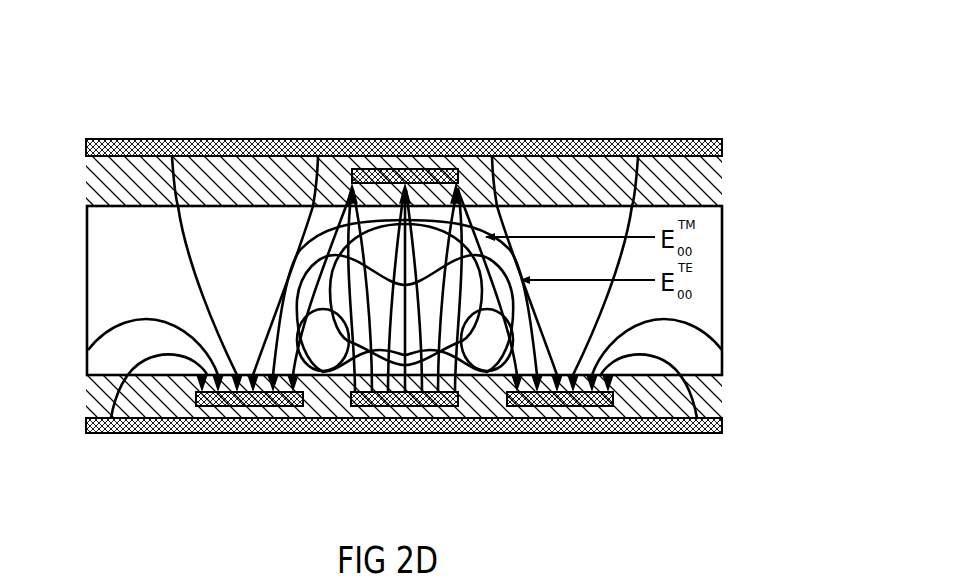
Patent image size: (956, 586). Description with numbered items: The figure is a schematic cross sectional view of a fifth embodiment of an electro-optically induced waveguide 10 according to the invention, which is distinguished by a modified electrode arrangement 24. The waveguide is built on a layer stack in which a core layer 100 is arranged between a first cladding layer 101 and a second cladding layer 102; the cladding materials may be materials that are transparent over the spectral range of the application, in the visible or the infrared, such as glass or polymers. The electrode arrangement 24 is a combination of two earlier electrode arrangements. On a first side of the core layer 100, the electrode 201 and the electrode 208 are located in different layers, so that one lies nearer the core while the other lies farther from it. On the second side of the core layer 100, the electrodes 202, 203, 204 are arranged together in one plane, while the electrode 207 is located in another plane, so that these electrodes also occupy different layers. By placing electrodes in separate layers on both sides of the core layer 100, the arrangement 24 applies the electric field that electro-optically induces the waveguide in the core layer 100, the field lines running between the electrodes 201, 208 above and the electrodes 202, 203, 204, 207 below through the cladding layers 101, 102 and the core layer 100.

The electro-optic device 10 is at (78, 118).
The electrode arrangement 24 is at (70, 275).
The core layer 100 is at (722, 288).
The first cladding layer 101 is at (722, 180).
The second cladding layer 102 is at (722, 395).
The electrode 201 is at (572, 139).
The electrode 202 is at (256, 408).
The electrode 203 is at (410, 408).
The electrode 204 is at (565, 408).
The electrode 207 is at (675, 435).
The electrode 208 is at (400, 168).